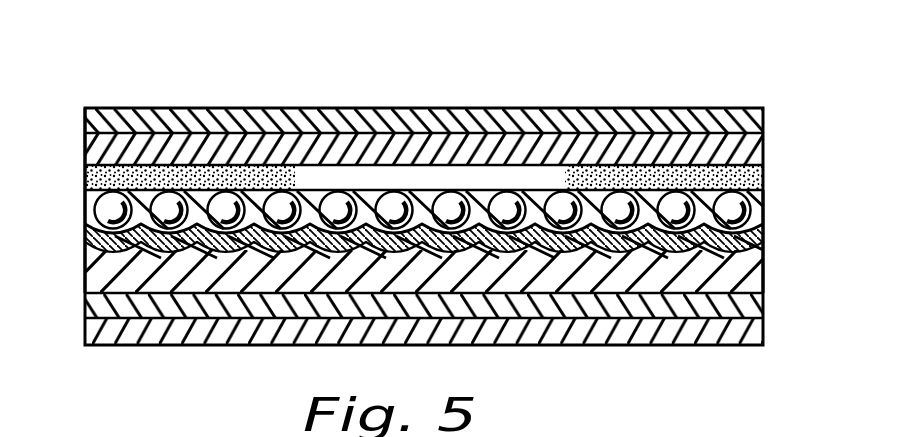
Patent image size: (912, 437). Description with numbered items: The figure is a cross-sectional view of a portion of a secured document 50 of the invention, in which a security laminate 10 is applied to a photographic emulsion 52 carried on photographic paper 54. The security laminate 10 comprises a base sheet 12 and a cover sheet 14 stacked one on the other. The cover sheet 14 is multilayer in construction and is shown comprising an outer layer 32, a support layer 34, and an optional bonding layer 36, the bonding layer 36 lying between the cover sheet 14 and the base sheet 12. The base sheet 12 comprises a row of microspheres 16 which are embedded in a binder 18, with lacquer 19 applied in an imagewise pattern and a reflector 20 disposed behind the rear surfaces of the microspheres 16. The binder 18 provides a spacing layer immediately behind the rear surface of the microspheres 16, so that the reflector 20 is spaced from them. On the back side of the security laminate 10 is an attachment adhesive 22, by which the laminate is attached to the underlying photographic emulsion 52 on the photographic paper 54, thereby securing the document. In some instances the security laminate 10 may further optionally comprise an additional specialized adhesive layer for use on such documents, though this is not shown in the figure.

The secured document 50 is at (613, 72).
The security laminate 10 is at (72, 113).
The cover sheet 14 is at (780, 108).
The support layer 34 is at (112, 121).
The outer layer 32 is at (706, 119).
The bonding layer 36 is at (147, 174).
The base sheet 12 is at (800, 190).
The microspheres 16 is at (695, 200).
The binder 18 is at (197, 200).
The lacquer 19 is at (672, 251).
The reflector 20 is at (718, 258).
The attachment adhesive 22 is at (744, 279).
The photographic emulsion 52 is at (100, 305).
The photographic paper 54 is at (130, 333).